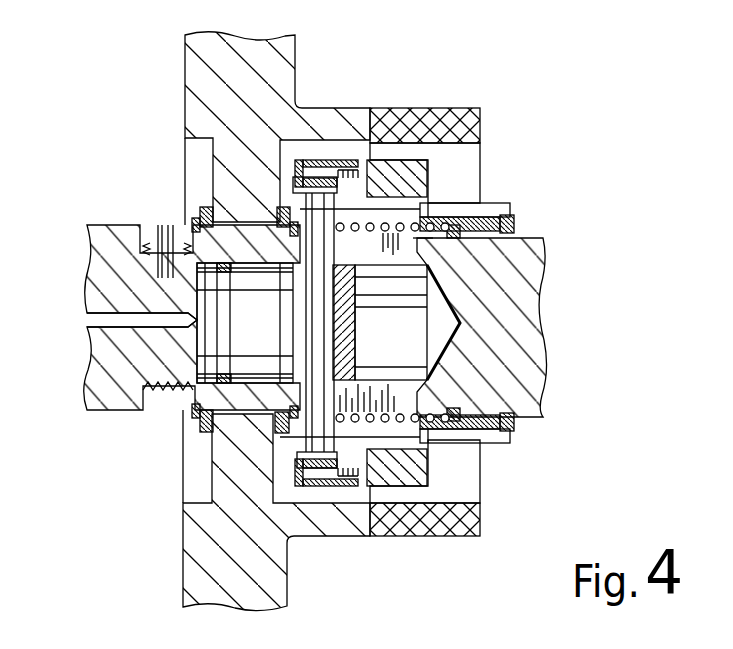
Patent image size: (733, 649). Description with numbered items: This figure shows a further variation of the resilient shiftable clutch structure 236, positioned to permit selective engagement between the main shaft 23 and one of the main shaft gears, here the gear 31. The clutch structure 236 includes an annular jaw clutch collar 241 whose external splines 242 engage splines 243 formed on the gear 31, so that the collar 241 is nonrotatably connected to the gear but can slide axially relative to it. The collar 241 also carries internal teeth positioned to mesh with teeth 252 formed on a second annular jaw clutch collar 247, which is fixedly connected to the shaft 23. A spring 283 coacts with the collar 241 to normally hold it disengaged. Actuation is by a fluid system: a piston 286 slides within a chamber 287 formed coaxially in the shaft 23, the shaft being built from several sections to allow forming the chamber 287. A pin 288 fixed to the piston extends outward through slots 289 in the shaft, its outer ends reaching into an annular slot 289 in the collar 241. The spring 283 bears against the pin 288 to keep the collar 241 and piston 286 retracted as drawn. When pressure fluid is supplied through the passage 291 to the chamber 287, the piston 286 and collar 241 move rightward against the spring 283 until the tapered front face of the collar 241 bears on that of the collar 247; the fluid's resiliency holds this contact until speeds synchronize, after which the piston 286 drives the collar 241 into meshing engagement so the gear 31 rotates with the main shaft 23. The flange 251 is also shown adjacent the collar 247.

The gear 31 is at (266, 52).
The main shaft 23 is at (536, 272).
The resilient shiftable clutch structure 236 is at (475, 284).
The annular jaw clutch collar 241 is at (418, 245).
The external splines 242 is at (420, 150).
The splines 243 is at (468, 150).
The annular jaw clutch collar 247 is at (500, 222).
The flange 251 is at (433, 240).
The teeth 252 is at (490, 210).
The spring 283 is at (388, 232).
The piston 286 is at (257, 345).
The chamber 287 is at (197, 418).
The pin 288 is at (330, 308).
The slots 289 is at (326, 197).
The passage 291 is at (97, 319).